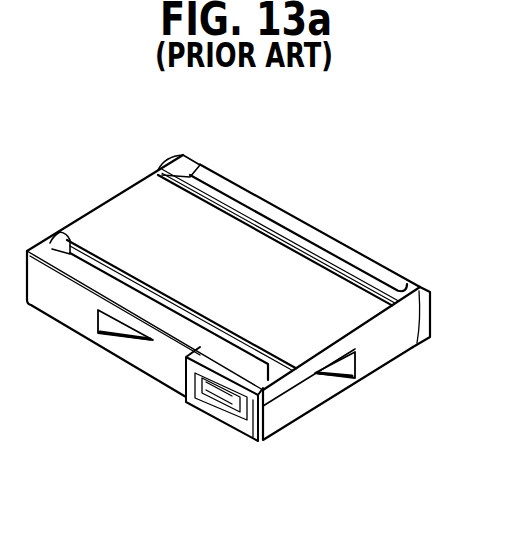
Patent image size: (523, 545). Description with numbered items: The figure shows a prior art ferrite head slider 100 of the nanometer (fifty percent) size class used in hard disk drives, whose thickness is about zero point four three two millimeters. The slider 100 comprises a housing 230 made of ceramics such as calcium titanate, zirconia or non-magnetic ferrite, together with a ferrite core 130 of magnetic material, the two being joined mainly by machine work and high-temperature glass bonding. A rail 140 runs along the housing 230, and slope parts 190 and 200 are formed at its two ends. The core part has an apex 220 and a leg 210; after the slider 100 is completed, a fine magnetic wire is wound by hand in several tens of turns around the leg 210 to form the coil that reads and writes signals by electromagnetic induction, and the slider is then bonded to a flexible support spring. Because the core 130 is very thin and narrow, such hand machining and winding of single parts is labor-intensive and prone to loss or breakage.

The slider 100 is at (230, 174).
The ferrite core 130 is at (222, 424).
The rail 140 is at (360, 269).
The slope part 190 is at (53, 248).
The slope part 200 is at (404, 298).
The leg 210 is at (253, 425).
The apex 220 is at (220, 372).
The housing 230 is at (243, 258).